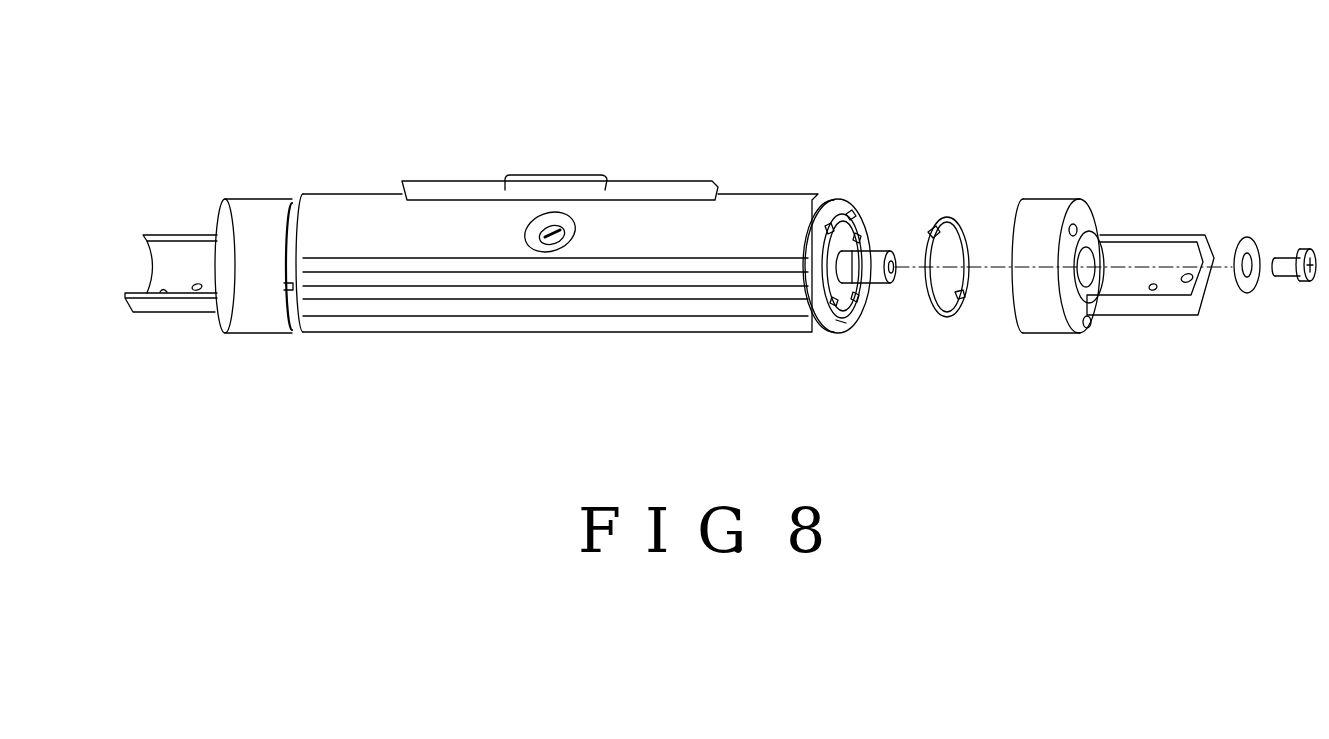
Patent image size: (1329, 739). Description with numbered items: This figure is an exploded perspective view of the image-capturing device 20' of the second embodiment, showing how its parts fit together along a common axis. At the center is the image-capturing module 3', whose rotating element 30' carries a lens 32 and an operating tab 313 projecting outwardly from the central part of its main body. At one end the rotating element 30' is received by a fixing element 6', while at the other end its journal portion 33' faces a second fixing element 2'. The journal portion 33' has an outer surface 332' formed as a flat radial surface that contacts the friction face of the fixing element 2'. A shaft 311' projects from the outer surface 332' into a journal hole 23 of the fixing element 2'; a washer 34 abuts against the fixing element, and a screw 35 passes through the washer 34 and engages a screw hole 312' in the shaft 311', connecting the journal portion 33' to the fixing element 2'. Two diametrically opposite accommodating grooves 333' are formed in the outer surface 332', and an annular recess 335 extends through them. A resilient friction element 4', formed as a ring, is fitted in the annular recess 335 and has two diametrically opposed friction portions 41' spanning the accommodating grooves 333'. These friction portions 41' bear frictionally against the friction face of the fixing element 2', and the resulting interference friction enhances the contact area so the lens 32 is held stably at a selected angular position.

The fixing element 6' is at (202, 204).
The image-capturing device 20' is at (294, 196).
The image-capturing module 3' is at (551, 185).
The operating tab 313 is at (562, 190).
The lens 32 is at (545, 230).
The rotating element 30' is at (806, 192).
The journal portion 33' is at (872, 186).
The accommodating grooves 333' is at (866, 234).
The annular recess 335 is at (851, 210).
The outer surface 332' is at (872, 359).
The shaft 311' is at (778, 315).
The screw hole 312' is at (907, 318).
The resilient friction element 4' is at (961, 199).
The friction portions 41' is at (977, 277).
The fixing element 2' is at (1058, 193).
The journal hole 23 is at (1092, 210).
The washer 34 is at (1243, 240).
The screw 35 is at (1313, 250).